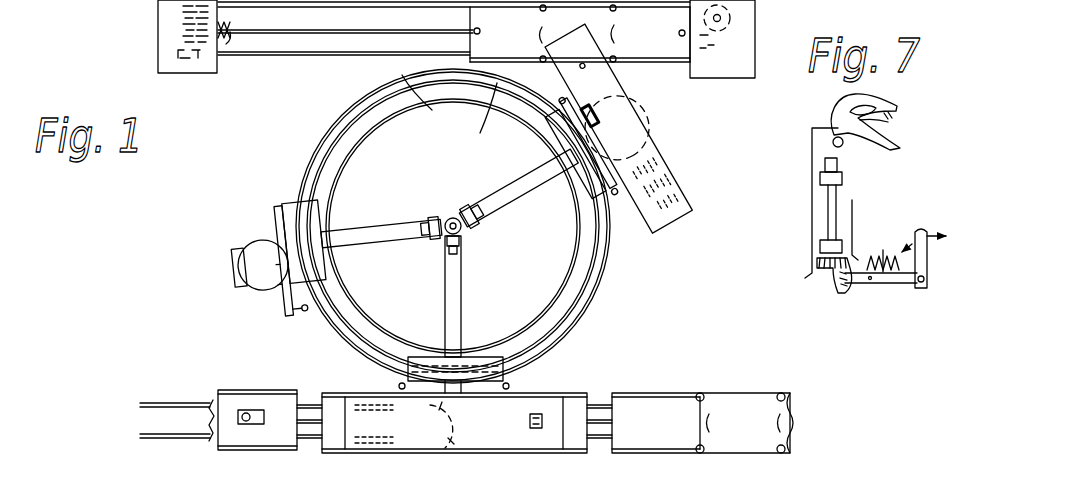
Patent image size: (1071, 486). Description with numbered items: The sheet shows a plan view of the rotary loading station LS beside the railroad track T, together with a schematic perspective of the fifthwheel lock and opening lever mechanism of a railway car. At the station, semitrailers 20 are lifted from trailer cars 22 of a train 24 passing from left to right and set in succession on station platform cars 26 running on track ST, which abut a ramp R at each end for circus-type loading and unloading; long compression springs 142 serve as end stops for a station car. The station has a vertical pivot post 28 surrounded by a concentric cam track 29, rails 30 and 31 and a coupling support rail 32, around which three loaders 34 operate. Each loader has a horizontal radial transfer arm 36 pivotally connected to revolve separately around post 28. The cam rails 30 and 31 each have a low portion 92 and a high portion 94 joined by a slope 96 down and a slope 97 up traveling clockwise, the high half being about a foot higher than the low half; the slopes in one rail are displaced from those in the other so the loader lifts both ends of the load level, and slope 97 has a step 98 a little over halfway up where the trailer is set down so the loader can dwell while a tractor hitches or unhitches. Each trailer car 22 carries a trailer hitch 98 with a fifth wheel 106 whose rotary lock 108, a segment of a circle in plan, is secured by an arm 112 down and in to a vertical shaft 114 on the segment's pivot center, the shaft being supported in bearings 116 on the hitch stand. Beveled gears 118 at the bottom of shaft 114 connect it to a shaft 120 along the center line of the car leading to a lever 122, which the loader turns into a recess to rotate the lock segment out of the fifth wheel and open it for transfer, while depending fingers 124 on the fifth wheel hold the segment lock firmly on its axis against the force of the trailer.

In FIG. 1, the semitrailer 20 is at (667, 225).
In FIG. 1, the trailer car 22 is at (287, 468).
In FIG. 1, the train 24 is at (672, 392).
In FIG. 1, the station platform car 26 is at (638, 51).
In FIG. 1, the vertical pivot post 28 is at (456, 217).
In FIG. 1, the cam track 29 is at (356, 106).
In FIG. 1, the cam track rail 30 is at (325, 135).
In FIG. 1, the cam track rail 31 is at (322, 158).
In FIG. 1, the coupling support rail 32 is at (345, 140).
In FIG. 1, the loader 34 is at (447, 277).
In FIG. 1, the horizontal radial transfer arm 36 is at (387, 226).
In FIG. 1, the low portion 92 is at (348, 339).
In FIG. 1, the high portion 94 is at (614, 284).
In FIG. 1, the slope down 96 is at (433, 321).
In FIG. 1, the slope up 97 is at (497, 83).
In FIG. 1, the trailer hitch 98 is at (407, 78).
In FIG. 7, the trailer hitch 98 is at (813, 165).
In FIG. 7, the fifth wheel 106 is at (813, 103).
In FIG. 7, the rotary lock 108 is at (890, 120).
In FIG. 7, the arm 112 is at (863, 160).
In FIG. 7, the vertical shaft 114 is at (836, 212).
In FIG. 7, the bearings 116 is at (822, 243).
In FIG. 7, the beveled gears 118 is at (835, 288).
In FIG. 7, the shaft 120 is at (870, 282).
In FIG. 7, the lever 122 is at (937, 268).
In FIG. 7, the depending fingers 124 is at (893, 110).
In FIG. 1, the compression springs 142 is at (230, 47).
In FIG. 1, the ramp R is at (158, 31).
In FIG. 1, the station track ST is at (322, 8).
In FIG. 1, the rotary loading station LS is at (208, 254).
In FIG. 1, the railroad track T is at (157, 428).